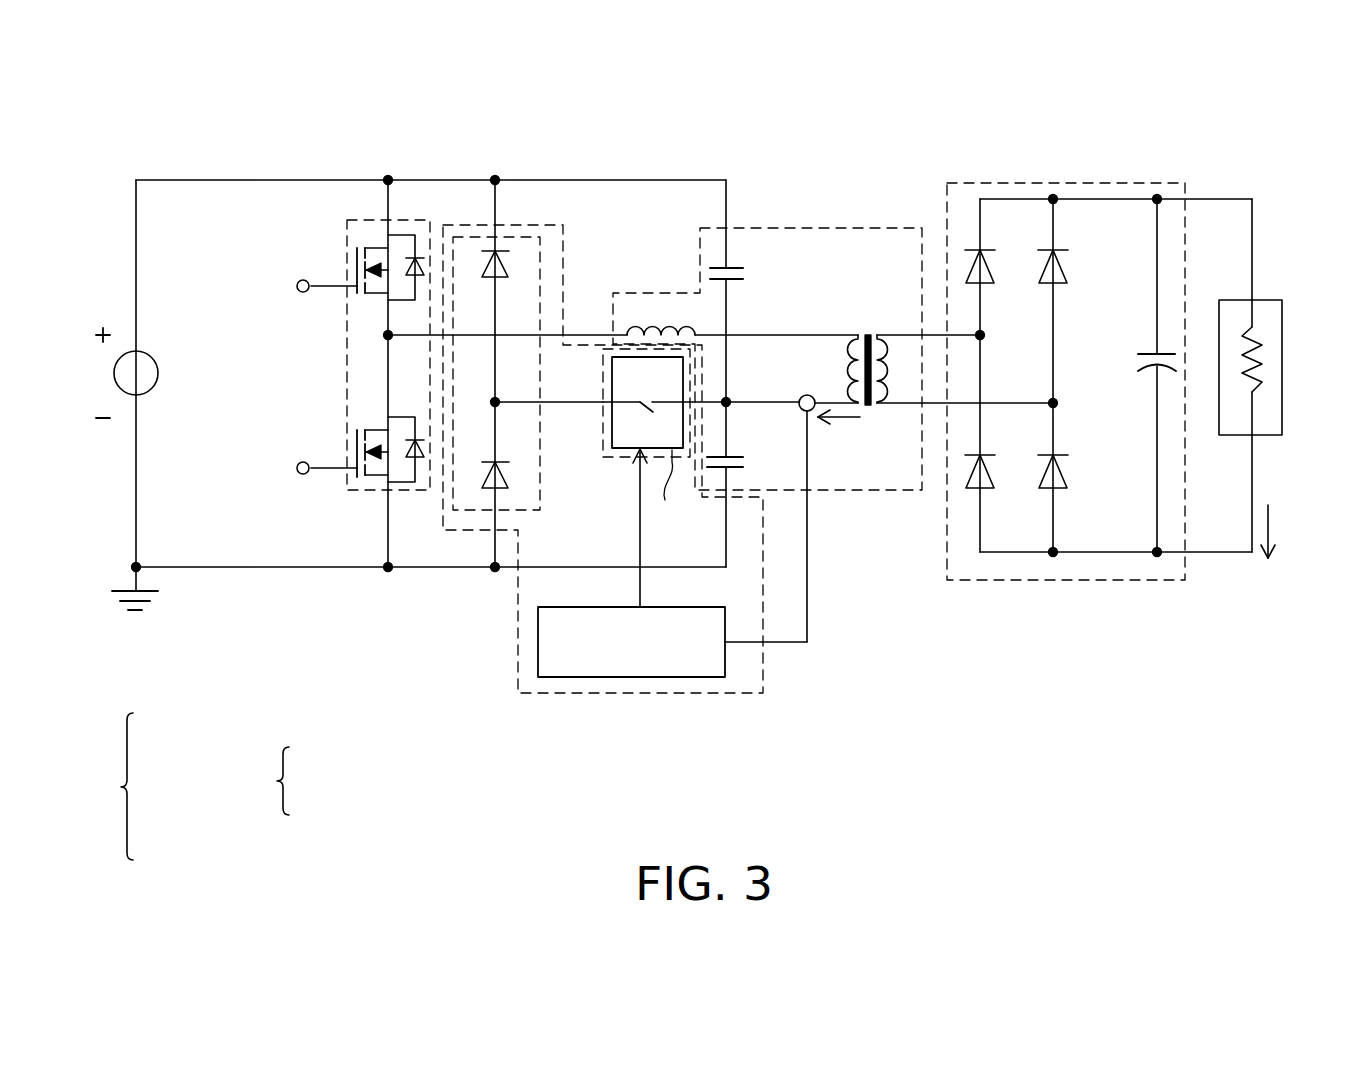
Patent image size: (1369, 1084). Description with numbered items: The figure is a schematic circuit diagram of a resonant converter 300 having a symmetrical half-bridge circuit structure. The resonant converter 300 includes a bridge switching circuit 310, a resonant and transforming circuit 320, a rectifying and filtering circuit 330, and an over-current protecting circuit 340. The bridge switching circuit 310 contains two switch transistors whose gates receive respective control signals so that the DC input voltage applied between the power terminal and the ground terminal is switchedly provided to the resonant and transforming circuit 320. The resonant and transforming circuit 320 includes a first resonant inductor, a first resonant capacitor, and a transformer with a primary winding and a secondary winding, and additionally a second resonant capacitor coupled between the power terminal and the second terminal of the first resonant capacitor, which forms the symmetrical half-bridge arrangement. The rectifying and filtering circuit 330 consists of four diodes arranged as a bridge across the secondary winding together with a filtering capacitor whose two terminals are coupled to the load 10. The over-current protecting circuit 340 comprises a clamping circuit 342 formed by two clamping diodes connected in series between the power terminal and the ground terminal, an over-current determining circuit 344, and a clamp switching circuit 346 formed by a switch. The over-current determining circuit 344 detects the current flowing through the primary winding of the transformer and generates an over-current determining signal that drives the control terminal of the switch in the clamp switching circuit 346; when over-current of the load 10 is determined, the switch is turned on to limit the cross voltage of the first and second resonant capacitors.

The load 10 is at (1283, 345).
The resonant converter 300 is at (1272, 717).
The bridge switching circuit 310 is at (418, 220).
The resonant and transforming circuit 320 is at (795, 227).
The rectifying and filtering circuit 330 is at (1098, 182).
The over-current protecting circuit 340 is at (765, 670).
The clamping circuit 342 is at (457, 560).
The over-current determining circuit 344 is at (628, 678).
The clamp switching circuit 346 is at (603, 437).